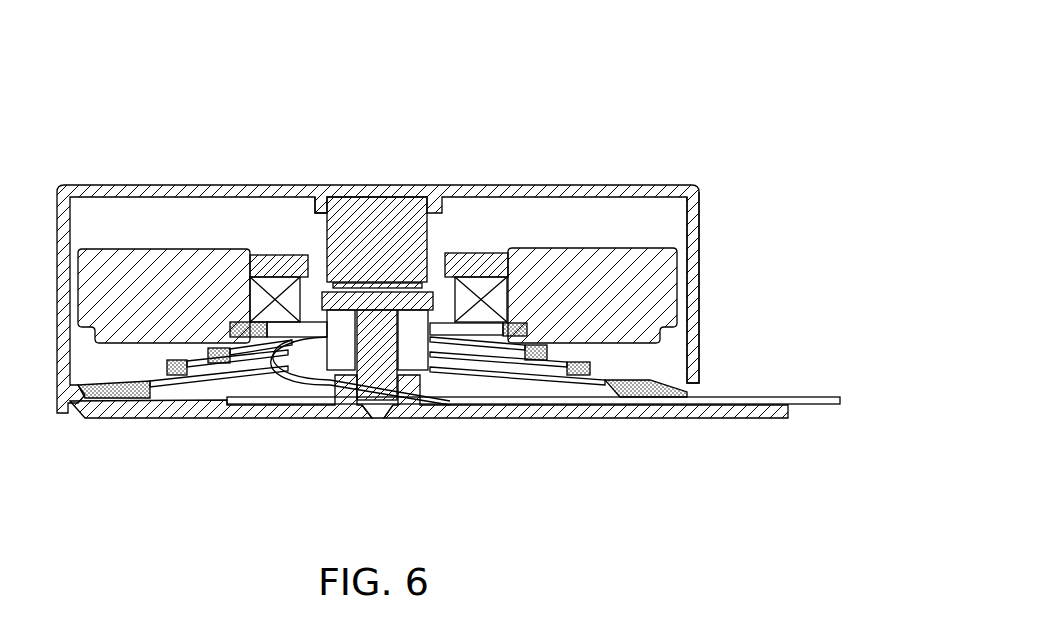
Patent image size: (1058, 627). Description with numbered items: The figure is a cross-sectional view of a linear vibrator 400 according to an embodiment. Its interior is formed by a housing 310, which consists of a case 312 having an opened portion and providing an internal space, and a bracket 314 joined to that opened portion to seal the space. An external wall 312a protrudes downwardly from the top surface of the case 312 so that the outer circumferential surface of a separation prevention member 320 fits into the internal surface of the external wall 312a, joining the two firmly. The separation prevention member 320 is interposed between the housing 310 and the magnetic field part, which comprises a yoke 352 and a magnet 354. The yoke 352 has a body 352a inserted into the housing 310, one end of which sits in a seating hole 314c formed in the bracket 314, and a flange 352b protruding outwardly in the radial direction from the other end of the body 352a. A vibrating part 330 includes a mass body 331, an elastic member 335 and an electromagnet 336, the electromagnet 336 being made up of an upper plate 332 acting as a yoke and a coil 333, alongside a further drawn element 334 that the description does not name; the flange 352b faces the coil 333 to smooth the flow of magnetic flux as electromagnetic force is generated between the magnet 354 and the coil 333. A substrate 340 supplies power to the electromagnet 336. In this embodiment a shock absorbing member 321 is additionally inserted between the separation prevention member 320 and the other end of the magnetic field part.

The linear vibrator 400 is at (150, 110).
The housing 310 is at (408, 341).
The case 312 is at (62, 376).
The external wall 312a is at (306, 200).
The bracket 314 is at (123, 419).
The seating hole 314c is at (390, 406).
The separation prevention member 320 is at (364, 205).
The shock absorbing member 321 is at (400, 284).
The vibrating part 330 is at (413, 202).
The mass body 331 is at (633, 266).
The upper plate 332 is at (470, 262).
The coil 333 is at (495, 295).
The adhesive member 334 is at (517, 322).
The elastic member 335 is at (701, 250).
The electromagnet 336 is at (422, 205).
The substrate 340 is at (537, 405).
The yoke 352 is at (382, 437).
The body 352a is at (338, 392).
The flange 352b is at (287, 362).
The magnet 354 is at (442, 368).